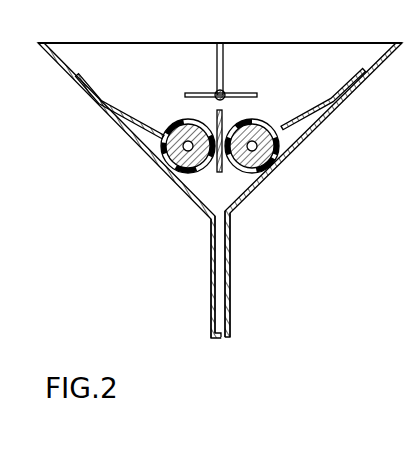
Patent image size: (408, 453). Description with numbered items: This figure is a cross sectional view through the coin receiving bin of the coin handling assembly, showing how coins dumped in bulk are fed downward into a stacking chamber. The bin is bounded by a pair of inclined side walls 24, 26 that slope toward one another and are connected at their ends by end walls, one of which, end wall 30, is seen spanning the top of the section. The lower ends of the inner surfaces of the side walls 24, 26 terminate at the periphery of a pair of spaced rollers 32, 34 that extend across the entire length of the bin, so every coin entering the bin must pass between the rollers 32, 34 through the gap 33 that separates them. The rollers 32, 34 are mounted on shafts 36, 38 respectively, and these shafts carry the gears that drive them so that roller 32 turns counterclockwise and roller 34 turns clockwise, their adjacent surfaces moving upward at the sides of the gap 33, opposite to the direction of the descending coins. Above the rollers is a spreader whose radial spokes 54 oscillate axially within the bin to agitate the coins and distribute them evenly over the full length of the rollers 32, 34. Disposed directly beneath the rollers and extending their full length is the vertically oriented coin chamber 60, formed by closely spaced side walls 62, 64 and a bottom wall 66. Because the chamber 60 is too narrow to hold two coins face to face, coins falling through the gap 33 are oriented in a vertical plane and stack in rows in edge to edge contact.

The end wall 30 is at (188, 53).
The roller 32 is at (173, 175).
The roller 34 is at (285, 158).
The inclined side wall 24 is at (317, 106).
The inclined side wall 26 is at (134, 117).
The gap 33 is at (226, 128).
The shaft 36 is at (172, 150).
The shaft 38 is at (268, 167).
The radial spokes 54 is at (210, 92).
The coin chamber 60 is at (218, 298).
The side wall 62 is at (212, 257).
The side wall 64 is at (232, 252).
The bottom wall 66 is at (216, 340).